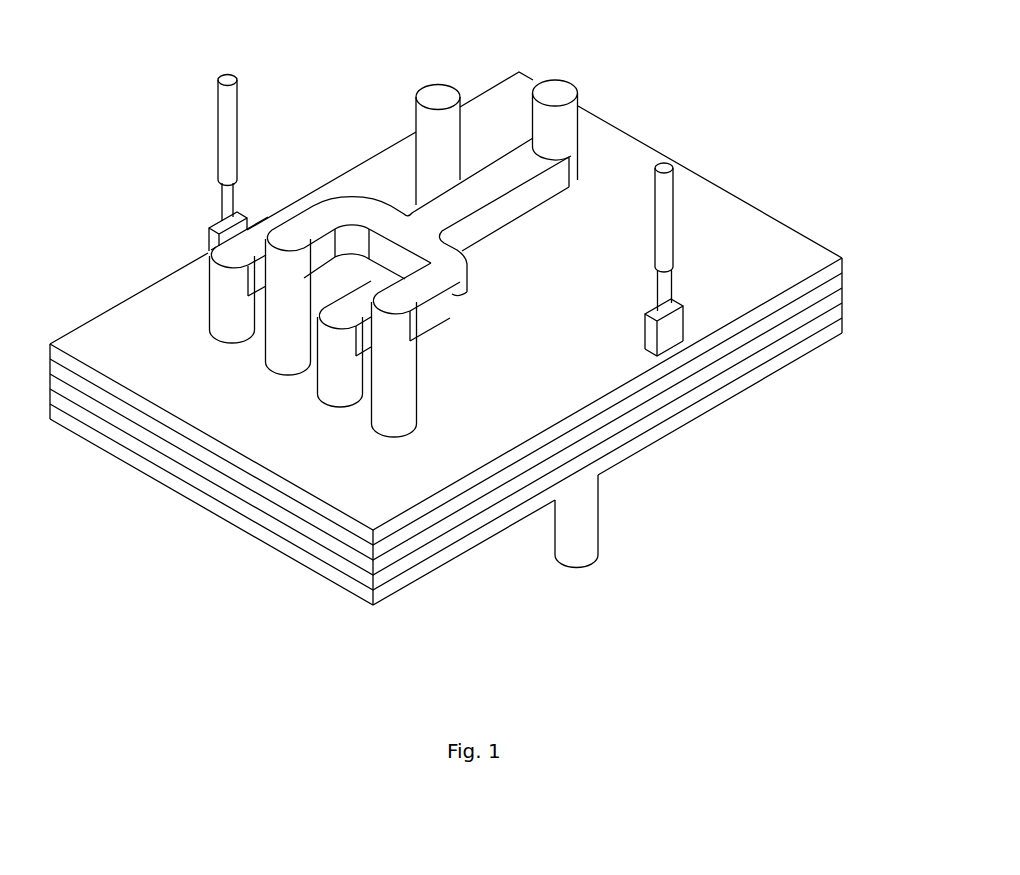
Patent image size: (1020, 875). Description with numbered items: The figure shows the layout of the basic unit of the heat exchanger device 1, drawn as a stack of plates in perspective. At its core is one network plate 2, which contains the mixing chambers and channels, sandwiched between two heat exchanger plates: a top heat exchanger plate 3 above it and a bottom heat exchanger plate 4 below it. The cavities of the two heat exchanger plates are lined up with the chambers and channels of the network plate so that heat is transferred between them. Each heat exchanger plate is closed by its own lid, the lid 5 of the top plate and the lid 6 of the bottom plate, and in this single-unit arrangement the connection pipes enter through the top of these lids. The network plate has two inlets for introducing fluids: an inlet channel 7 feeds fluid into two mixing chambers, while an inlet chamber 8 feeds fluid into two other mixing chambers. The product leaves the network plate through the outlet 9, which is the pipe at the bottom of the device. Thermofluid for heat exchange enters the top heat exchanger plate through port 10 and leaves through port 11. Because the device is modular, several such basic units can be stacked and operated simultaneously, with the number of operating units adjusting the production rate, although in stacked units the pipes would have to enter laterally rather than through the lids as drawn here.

The heat exchanger device 1 is at (92, 325).
The network plate 2 is at (838, 300).
The top heat exchanger plate 3 is at (828, 292).
The bottom heat exchanger plate 4 is at (365, 582).
The lid of top heat exchanger plate 5 is at (282, 548).
The lid of bottom heat exchanger plate 6 is at (835, 268).
The inlet channel 7 is at (432, 94).
The inlet chamber 8 is at (550, 87).
The outlet 9 is at (555, 553).
The thermofluid inlet port 10 is at (212, 112).
The thermofluid outlet port 11 is at (661, 194).